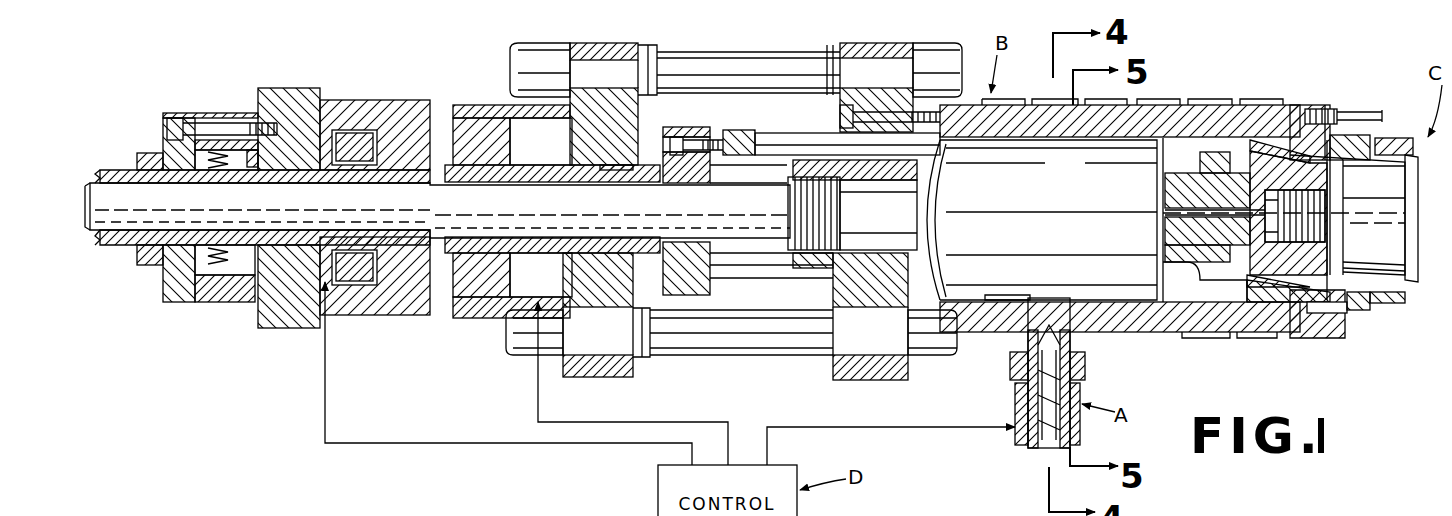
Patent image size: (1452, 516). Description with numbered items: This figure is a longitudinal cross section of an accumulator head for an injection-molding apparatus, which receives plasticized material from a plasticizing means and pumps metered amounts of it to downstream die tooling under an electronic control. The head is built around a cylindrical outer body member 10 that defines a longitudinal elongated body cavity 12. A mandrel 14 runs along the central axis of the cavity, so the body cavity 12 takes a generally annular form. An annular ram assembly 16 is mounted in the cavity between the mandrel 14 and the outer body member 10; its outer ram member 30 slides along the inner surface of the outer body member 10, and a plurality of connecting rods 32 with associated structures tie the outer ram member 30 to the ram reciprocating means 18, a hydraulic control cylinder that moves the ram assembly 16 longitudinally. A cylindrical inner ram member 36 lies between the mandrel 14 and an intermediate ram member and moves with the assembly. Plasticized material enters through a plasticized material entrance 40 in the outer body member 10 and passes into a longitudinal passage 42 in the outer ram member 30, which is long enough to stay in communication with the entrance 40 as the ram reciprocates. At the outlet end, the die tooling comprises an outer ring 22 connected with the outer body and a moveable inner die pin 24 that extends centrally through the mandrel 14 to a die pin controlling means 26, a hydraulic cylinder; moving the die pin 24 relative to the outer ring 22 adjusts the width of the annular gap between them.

The outer body member 10 is at (1153, 120).
The body cavity 12 is at (1175, 288).
The mandrel 14 is at (1225, 185).
The ram assembly 16 is at (1173, 153).
The ram reciprocating means 18 is at (470, 103).
The outer ring 22 is at (1382, 303).
The die pin 24 is at (1370, 230).
The die pin controlling means 26 is at (358, 98).
The outer ram member 30 is at (1075, 196).
The connecting rods 32 is at (762, 142).
The inner ram member 36 is at (454, 504).
The plasticized material entrance 40 is at (1045, 312).
The longitudinal passage 42 is at (997, 308).